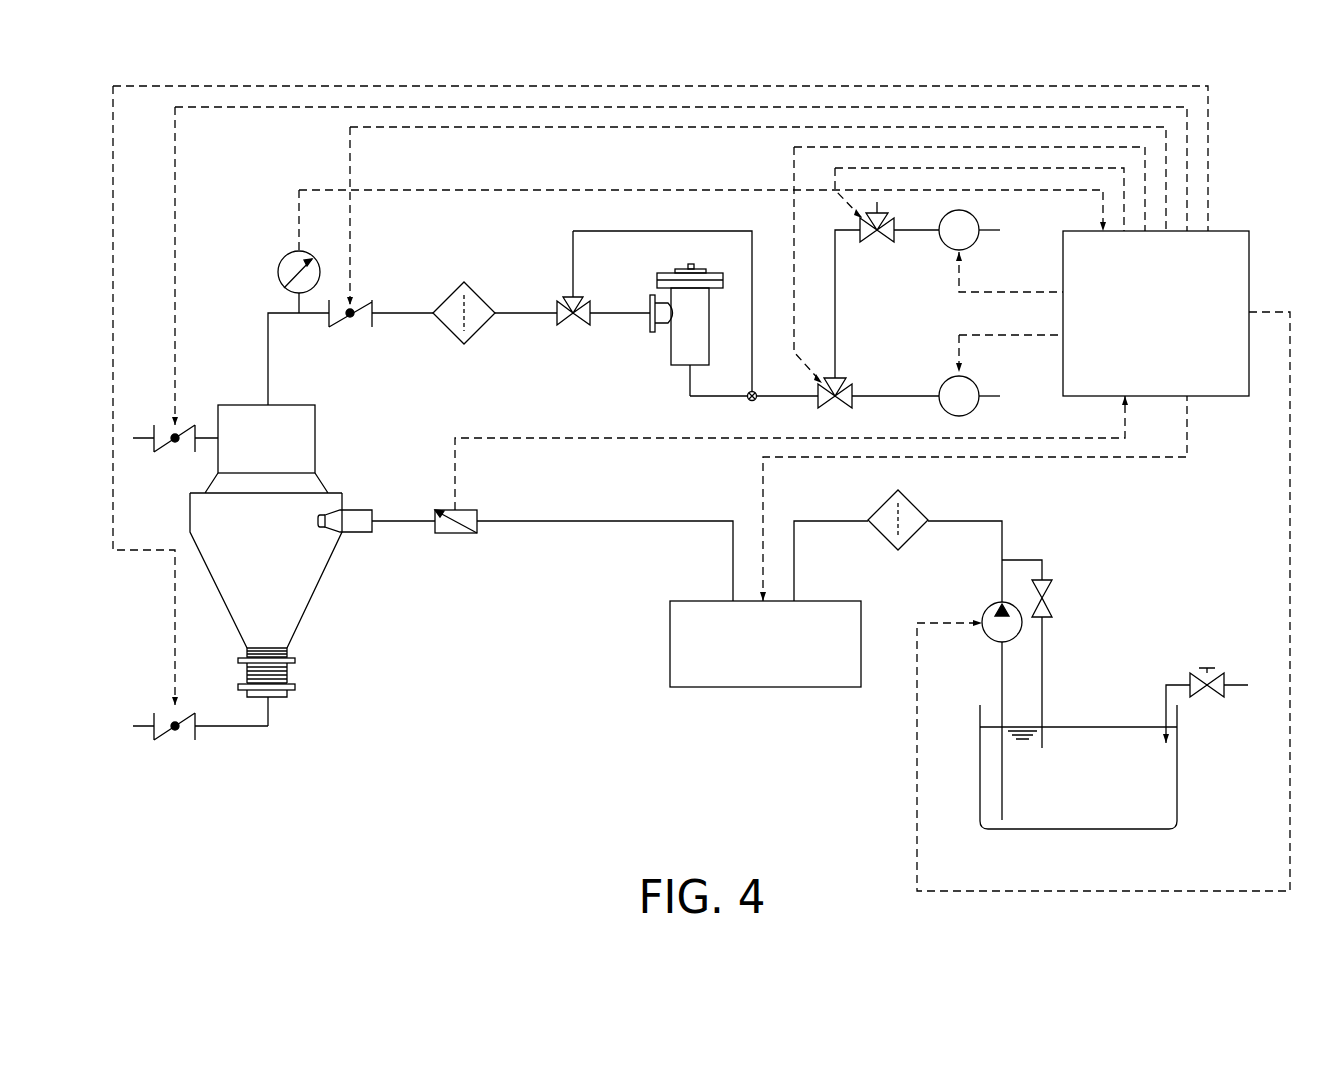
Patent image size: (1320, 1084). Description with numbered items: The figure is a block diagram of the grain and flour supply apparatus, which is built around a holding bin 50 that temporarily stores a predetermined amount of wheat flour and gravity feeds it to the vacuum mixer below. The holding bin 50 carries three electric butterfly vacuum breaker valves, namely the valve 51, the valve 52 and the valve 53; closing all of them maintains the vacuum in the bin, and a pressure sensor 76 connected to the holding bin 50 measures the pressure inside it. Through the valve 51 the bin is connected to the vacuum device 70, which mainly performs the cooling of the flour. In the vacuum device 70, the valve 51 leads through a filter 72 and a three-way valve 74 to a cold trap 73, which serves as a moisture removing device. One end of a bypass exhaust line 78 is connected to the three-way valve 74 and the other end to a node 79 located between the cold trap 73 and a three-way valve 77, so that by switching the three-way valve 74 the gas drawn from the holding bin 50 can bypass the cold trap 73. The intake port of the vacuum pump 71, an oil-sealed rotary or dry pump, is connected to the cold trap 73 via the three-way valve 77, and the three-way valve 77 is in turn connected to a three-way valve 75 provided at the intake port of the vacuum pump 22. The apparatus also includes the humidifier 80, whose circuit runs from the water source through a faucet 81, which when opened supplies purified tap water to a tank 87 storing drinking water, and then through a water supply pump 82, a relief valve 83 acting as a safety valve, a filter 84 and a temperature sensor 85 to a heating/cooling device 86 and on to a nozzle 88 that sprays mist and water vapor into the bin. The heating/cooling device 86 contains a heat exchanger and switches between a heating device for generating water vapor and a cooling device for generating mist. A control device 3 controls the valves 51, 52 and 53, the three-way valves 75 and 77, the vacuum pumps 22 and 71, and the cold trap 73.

The control device 3 is at (1229, 238).
The vacuum pump 22 is at (975, 243).
The holding bin 50 is at (310, 583).
The valve 51 is at (365, 300).
The valve 52 is at (185, 422).
The valve 53 is at (200, 735).
The vacuum device 70 is at (605, 335).
The vacuum pump 71 is at (975, 387).
The filter 72 is at (477, 325).
The cold trap 73 is at (673, 348).
The three-way valve 74 is at (557, 299).
The three-way valve 75 is at (877, 238).
The pressure sensor 76 is at (282, 258).
The three-way valve 77 is at (848, 382).
The bypass exhaust line 78 is at (713, 230).
The node 79 is at (758, 400).
The humidifier 80 is at (572, 615).
The faucet 81 is at (1212, 663).
The water supply pump 82 is at (980, 605).
The relief valve 83 is at (1052, 595).
The filter 84 is at (913, 510).
The temperature sensor 85 is at (432, 528).
The heating/cooling device 86 is at (757, 688).
The tank 87 is at (1100, 818).
The nozzle 88 is at (363, 510).